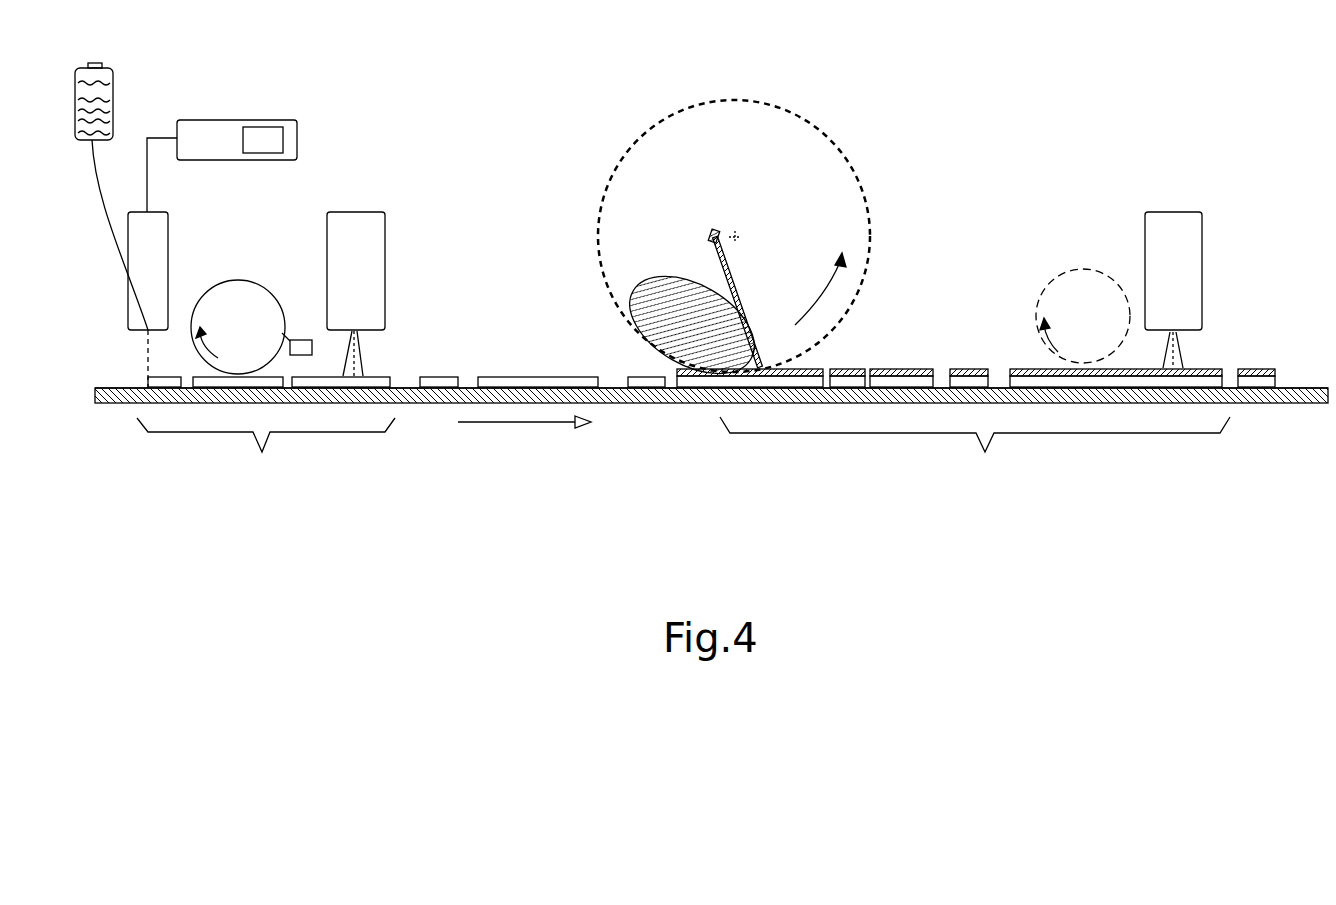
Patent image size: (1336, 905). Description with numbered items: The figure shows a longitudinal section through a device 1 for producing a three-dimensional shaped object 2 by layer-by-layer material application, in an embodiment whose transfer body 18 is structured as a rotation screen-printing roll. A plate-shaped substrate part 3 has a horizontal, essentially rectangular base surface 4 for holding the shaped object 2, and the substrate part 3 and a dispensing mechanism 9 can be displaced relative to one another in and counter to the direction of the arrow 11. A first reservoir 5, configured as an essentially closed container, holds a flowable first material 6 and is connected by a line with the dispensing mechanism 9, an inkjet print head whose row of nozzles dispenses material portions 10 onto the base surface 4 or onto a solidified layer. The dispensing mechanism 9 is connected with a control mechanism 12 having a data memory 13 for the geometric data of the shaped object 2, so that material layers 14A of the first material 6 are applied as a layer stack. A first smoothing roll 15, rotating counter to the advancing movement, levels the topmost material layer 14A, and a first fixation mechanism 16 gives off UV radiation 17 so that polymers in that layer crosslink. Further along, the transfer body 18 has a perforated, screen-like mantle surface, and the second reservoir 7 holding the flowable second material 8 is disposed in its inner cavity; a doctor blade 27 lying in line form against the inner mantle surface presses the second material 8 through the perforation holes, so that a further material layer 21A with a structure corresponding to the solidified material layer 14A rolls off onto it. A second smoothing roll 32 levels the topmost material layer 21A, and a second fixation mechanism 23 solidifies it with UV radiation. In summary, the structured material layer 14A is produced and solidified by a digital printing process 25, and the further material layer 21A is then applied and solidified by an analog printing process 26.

The device 1 is at (1078, 597).
The three-dimensional shaped object 2 is at (1135, 358).
The substrate part 3 is at (632, 400).
The base surface 4 is at (114, 382).
The first reservoir 5 is at (110, 75).
The first material 6 is at (107, 118).
The second reservoir 7 is at (630, 276).
The second material 8 is at (687, 283).
The dispensing mechanism 9 is at (140, 283).
The material portions 10 is at (148, 358).
The arrow 11 is at (524, 446).
The control mechanism 12 is at (212, 133).
The data memory 13 is at (261, 135).
The material layer 14A is at (645, 377).
The first smoothing roll 15 is at (222, 337).
The first fixation mechanism 16 is at (340, 283).
The UV radiation 17 is at (364, 362).
The transfer body 18 is at (818, 132).
The further material layer 21A is at (897, 369).
The second fixation mechanism 23 is at (1158, 283).
The digital printing process 25 is at (266, 464).
The analog printing process 26 is at (975, 461).
The doctor blade 27 is at (733, 272).
The second smoothing roll 32 is at (1067, 327).